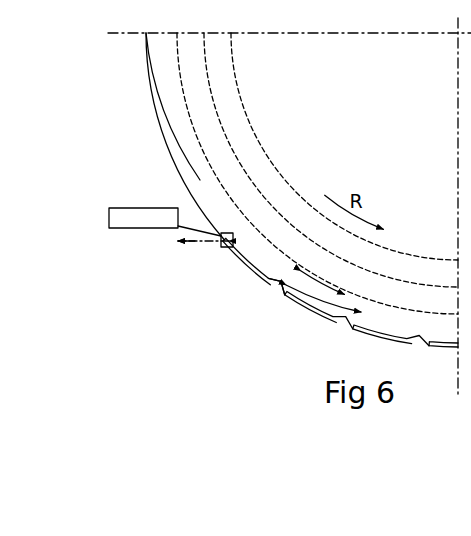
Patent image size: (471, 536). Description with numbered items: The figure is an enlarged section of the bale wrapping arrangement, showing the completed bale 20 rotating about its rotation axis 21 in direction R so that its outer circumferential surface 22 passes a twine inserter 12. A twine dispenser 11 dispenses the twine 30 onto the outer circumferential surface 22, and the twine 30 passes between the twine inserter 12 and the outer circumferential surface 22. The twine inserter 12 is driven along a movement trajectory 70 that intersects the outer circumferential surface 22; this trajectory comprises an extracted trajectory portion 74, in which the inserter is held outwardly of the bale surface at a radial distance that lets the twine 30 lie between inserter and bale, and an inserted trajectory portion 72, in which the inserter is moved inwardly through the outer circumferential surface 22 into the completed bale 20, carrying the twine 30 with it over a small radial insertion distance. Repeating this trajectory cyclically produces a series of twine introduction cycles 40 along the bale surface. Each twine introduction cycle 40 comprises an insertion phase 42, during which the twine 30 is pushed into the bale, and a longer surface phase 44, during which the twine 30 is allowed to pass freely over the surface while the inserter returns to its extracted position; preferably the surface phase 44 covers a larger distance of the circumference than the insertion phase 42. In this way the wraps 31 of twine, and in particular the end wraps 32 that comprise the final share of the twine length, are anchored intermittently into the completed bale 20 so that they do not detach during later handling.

The twine dispenser 11 is at (150, 220).
The twine inserter 12 is at (226, 255).
The completed bale 20 is at (158, 55).
The rotation axis 21 is at (448, 36).
The outer circumferential surface 22 is at (155, 120).
The twine 30 is at (291, 310).
The wraps 31 is at (265, 298).
The end wraps 32 is at (243, 281).
The twine introduction cycle 40 is at (322, 300).
The insertion phase 42 is at (352, 335).
The surface phase 44 is at (320, 335).
The movement trajectory 70 is at (197, 248).
The inserted trajectory portion 72 is at (232, 233).
The extracted trajectory portion 74 is at (175, 248).